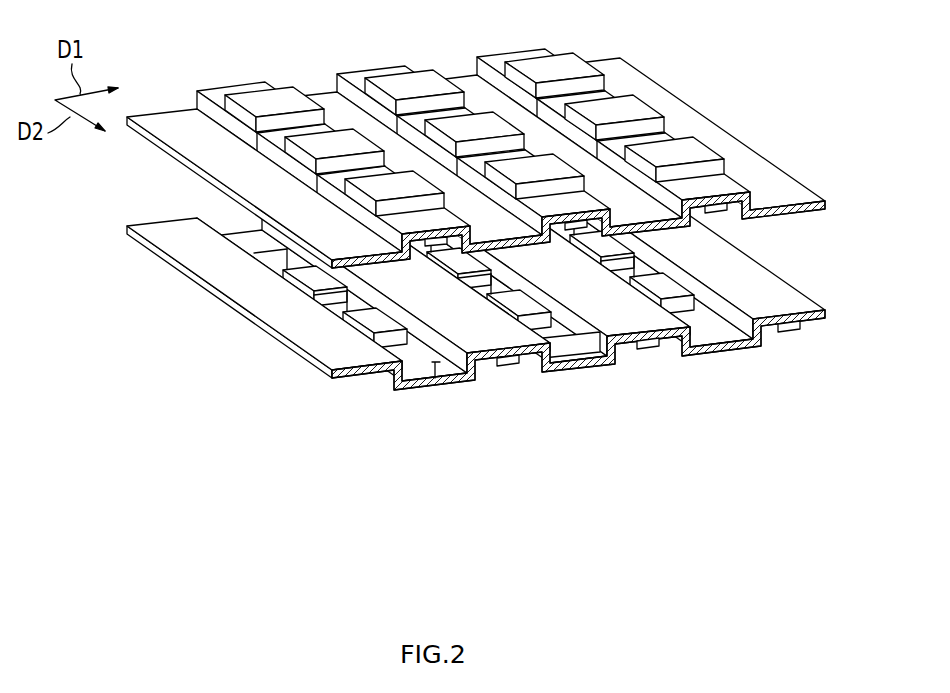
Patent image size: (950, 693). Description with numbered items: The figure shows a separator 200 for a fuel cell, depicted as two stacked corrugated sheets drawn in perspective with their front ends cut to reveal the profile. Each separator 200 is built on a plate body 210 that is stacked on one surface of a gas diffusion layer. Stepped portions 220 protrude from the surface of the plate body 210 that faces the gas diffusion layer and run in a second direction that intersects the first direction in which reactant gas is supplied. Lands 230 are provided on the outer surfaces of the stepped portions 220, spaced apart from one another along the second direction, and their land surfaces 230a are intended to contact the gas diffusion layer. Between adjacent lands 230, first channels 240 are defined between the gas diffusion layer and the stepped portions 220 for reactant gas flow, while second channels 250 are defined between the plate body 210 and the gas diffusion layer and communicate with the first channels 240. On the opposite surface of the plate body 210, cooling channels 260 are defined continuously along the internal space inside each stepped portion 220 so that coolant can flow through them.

The separator 200 is at (485, 240).
The plate body 210 is at (328, 100).
The stepped portion 220 is at (210, 100).
The land 230 is at (245, 240).
The land surface 230a is at (277, 97).
The first channel 240 is at (297, 118).
The second channel 250 is at (418, 157).
The cooling channel 260 is at (443, 243).